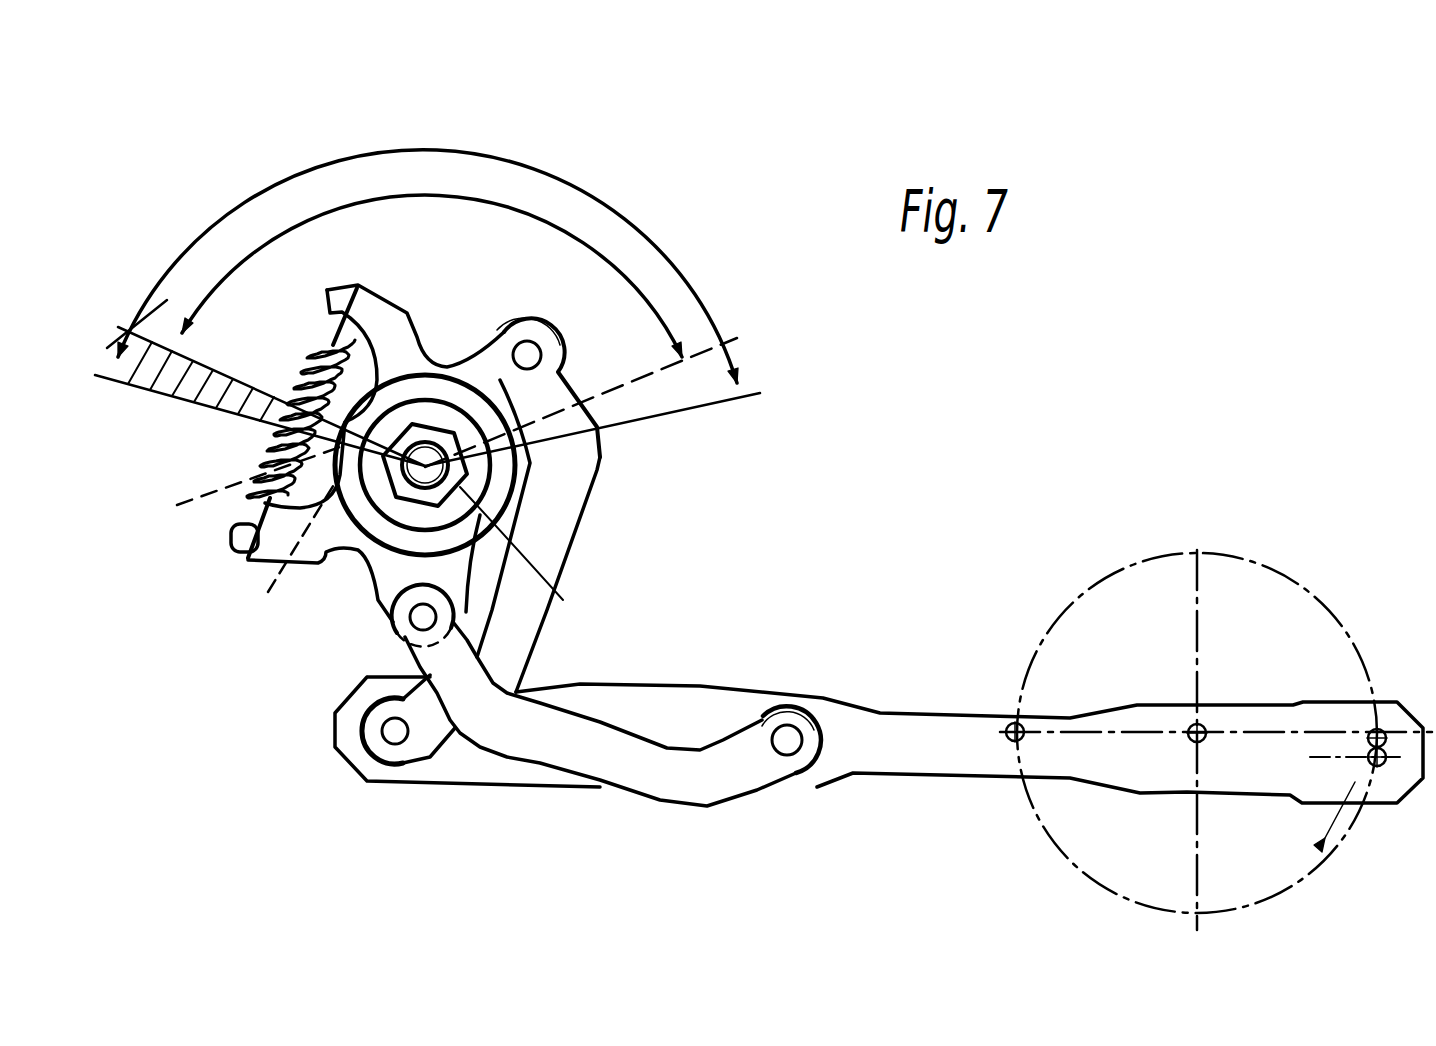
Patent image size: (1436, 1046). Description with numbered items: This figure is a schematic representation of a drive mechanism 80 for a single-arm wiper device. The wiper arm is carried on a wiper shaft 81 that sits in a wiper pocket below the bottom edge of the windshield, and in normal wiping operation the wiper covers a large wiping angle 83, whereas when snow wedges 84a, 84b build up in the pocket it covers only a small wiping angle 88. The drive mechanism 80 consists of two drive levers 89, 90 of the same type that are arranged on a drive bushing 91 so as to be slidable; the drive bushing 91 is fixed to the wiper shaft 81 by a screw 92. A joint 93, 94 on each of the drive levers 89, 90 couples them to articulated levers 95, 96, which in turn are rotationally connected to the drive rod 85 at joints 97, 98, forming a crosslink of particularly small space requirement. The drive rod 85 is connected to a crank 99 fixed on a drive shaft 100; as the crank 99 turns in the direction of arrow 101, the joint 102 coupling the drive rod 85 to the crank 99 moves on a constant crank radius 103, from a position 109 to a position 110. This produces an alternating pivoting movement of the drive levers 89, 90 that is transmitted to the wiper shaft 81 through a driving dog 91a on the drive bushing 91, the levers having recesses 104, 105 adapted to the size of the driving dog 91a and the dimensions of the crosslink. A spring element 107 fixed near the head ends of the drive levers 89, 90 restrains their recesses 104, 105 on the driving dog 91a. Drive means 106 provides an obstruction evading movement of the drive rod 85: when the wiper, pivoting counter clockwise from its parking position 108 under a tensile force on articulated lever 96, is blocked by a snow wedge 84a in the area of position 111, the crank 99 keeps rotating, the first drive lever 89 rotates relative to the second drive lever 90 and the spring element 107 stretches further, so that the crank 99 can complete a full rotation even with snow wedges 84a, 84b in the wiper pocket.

The drive mechanism 80 is at (805, 457).
The wiper shaft 81 is at (440, 470).
The large wiping angle 83 is at (430, 142).
The snow wedge 84a is at (157, 382).
The snow wedge 84b is at (633, 400).
The drive rod 85 is at (823, 698).
The small wiping angle 88 is at (425, 195).
The first drive lever 89 is at (326, 553).
The second drive lever 90 is at (437, 363).
The drive bushing 91 is at (525, 553).
The driving dog 91a is at (234, 487).
The screw 92 is at (467, 490).
The joint 93 is at (527, 350).
The joint 94 is at (403, 630).
The articulated lever 95 is at (520, 640).
The articulated lever 96 is at (553, 740).
The joint 97 is at (373, 750).
The joint 98 is at (790, 743).
The crank 99 is at (1222, 580).
The drive shaft 100 is at (1190, 725).
The arrow 101 is at (1320, 848).
The joint 102 is at (1378, 766).
The crank radius 103 is at (1290, 565).
The recess 104 is at (259, 543).
The recess 105 is at (249, 553).
The drive means 106 is at (247, 442).
The spring element 107 is at (297, 380).
The parking position 108 is at (693, 410).
The position 109 is at (1010, 725).
The position 110 is at (1380, 722).
The position 111 is at (123, 327).